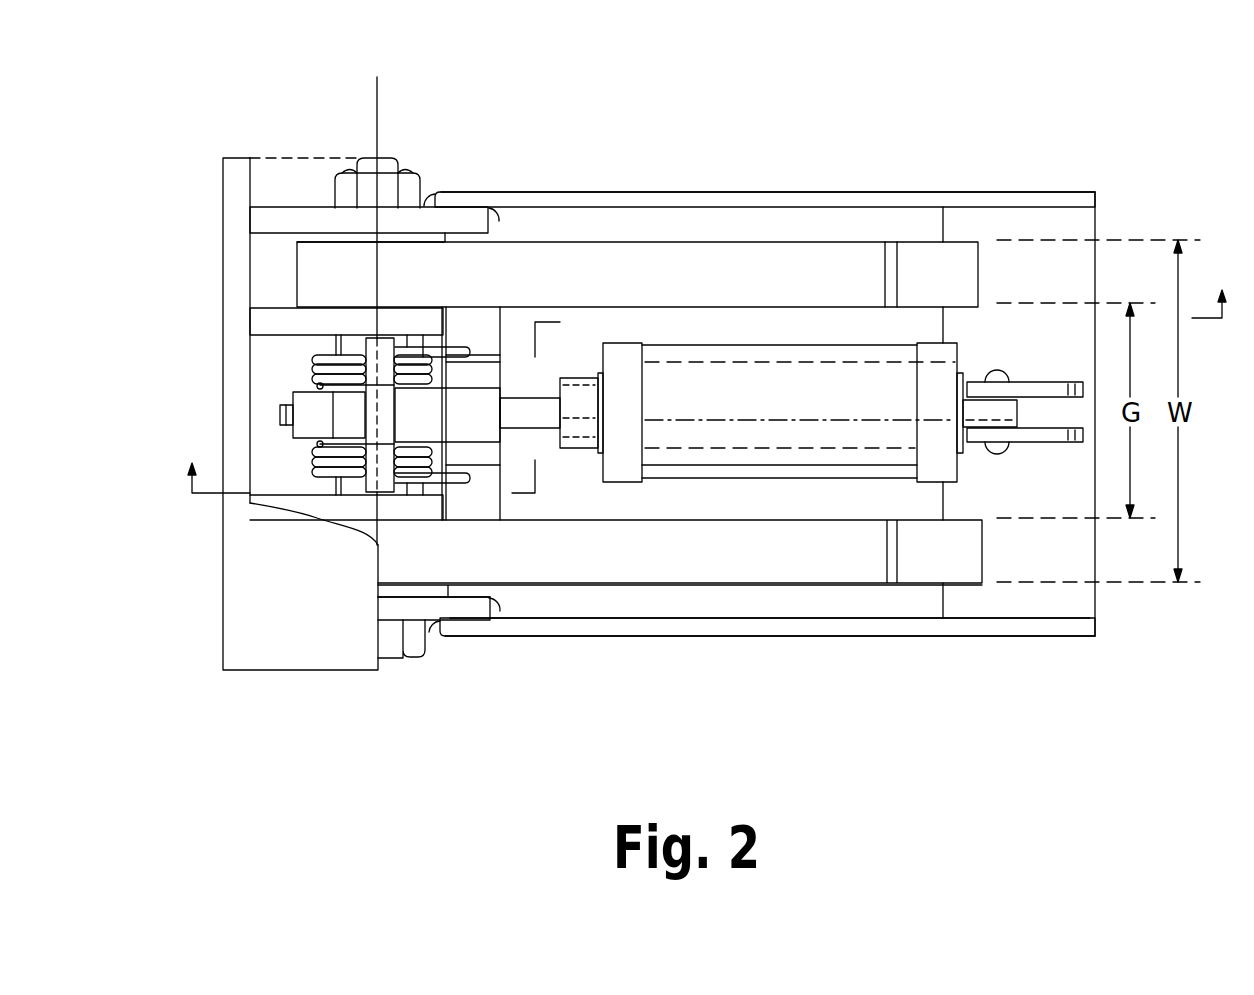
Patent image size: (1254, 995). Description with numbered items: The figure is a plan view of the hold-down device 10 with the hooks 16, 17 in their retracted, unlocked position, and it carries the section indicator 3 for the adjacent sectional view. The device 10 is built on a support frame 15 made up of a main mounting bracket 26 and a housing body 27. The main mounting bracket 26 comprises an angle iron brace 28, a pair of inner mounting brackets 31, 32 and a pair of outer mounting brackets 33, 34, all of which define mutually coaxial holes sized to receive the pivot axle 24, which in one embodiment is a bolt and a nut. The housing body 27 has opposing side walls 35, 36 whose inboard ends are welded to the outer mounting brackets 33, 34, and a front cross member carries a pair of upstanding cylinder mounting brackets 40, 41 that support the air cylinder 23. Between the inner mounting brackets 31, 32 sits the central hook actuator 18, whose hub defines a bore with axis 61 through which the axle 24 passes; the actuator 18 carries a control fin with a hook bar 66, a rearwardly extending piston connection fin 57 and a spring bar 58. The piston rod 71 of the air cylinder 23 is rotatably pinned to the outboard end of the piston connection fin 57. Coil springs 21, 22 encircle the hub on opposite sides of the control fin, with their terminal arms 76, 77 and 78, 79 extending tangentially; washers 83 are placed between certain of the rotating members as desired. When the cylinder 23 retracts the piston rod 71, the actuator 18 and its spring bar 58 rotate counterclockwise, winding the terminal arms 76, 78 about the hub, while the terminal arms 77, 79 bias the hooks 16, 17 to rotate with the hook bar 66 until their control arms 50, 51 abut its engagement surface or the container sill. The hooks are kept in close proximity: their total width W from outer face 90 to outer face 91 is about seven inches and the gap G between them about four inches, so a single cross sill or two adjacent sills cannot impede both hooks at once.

The hold-down device 10 is at (632, 106).
The support frame 15 is at (683, 637).
The hook 16 is at (803, 587).
The hook 17 is at (803, 240).
The central hook actuator 18 is at (333, 343).
The coil spring 21 is at (312, 473).
The coil spring 22 is at (312, 368).
The air cylinder 23 is at (750, 343).
The pivot axle 24 is at (405, 660).
The main mounting bracket 26 is at (246, 672).
The housing body 27 is at (920, 637).
The angle iron brace 28 is at (310, 672).
The inner mounting bracket 31 is at (317, 510).
The inner mounting bracket 32 is at (260, 307).
The outer mounting bracket 33 is at (463, 610).
The outer mounting bracket 34 is at (270, 207).
The side wall 35 is at (608, 630).
The side wall 36 is at (650, 195).
The cylinder mounting bracket 40 is at (1018, 447).
The cylinder mounting bracket 41 is at (1030, 381).
The control arm 50 is at (478, 505).
The control arm 51 is at (502, 327).
The piston connection fin 57 is at (282, 416).
The spring bar 58 is at (387, 337).
The axis 61 is at (382, 120).
The hook bar 66 is at (490, 372).
The piston rod 71 is at (542, 432).
The terminal arm 76 is at (318, 444).
The terminal arm 77 is at (458, 483).
The terminal arm 78 is at (318, 386).
The terminal arm 79 is at (455, 347).
The washer 83 is at (317, 238).
The outer face 90 is at (655, 588).
The outer face 91 is at (760, 240).
The section line 3- 3 is at (706, 411).